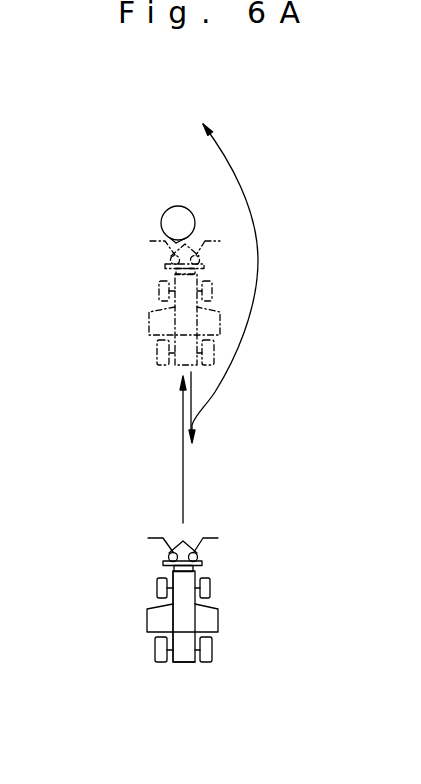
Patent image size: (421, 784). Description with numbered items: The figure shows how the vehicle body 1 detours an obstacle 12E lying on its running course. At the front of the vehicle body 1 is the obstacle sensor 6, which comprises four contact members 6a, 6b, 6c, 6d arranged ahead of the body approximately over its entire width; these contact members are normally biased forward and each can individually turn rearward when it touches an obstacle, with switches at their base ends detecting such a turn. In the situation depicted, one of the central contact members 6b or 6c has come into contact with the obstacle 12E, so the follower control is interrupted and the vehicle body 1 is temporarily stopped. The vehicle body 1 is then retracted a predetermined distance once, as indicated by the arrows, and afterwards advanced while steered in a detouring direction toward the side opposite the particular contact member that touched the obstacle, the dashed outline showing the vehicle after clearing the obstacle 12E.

The obstacle 12E is at (165, 210).
The obstacle sensor 6 is at (194, 546).
The contact member 6a is at (148, 538).
The contact member 6b is at (175, 538).
The contact member 6c is at (198, 538).
The contact member 6d is at (222, 538).
The vehicle body 1 is at (183, 663).